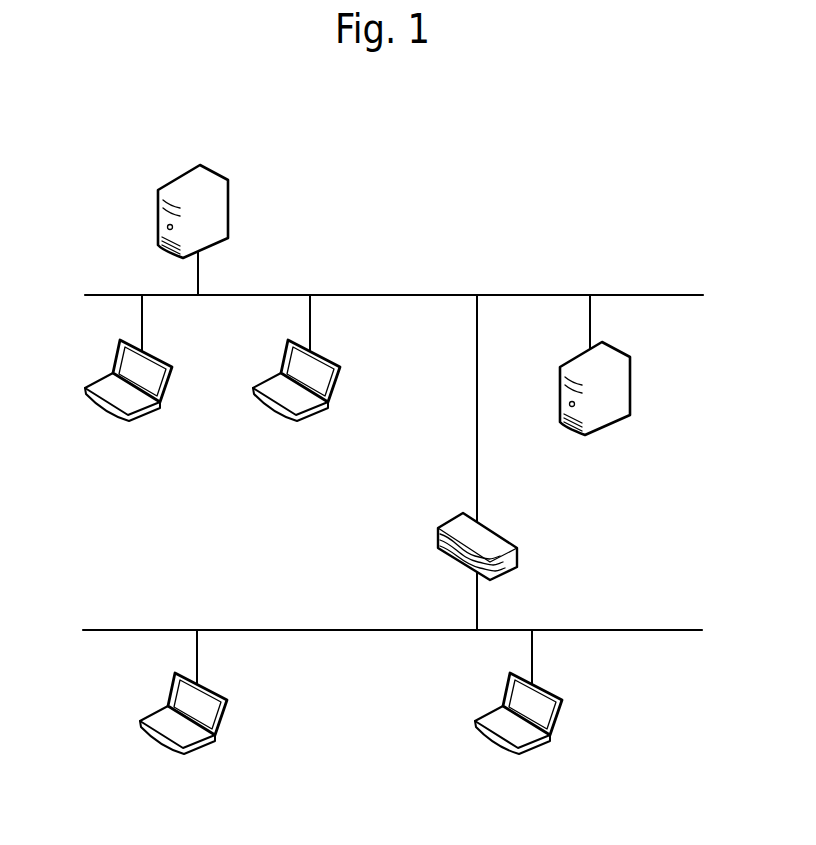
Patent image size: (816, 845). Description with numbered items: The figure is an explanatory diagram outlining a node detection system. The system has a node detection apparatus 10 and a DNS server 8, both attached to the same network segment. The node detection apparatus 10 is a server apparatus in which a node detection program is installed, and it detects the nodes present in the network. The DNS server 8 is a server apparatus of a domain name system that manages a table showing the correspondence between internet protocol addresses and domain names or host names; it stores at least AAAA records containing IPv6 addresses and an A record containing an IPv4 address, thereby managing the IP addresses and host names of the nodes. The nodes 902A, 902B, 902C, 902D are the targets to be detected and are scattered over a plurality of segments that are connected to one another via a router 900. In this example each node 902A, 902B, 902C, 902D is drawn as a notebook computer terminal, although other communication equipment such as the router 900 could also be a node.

The node detection apparatus 10 is at (197, 167).
The DNS server 8 is at (607, 425).
The router 900 is at (517, 551).
The node 902A is at (127, 423).
The node 902B is at (295, 423).
The node 902C is at (175, 756).
The node 902D is at (507, 756).